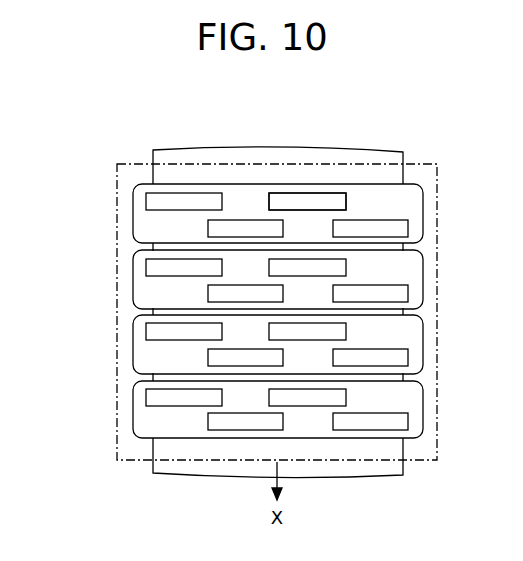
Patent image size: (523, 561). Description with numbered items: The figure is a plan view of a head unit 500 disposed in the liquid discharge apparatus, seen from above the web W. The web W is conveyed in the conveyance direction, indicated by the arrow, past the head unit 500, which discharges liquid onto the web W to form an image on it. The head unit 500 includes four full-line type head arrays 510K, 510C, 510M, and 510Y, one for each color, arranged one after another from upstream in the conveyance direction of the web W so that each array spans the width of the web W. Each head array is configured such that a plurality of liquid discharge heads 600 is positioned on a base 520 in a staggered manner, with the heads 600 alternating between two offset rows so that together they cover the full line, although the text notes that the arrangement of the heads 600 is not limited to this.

The head unit 500 is at (140, 130).
The web W is at (238, 157).
The base 520 is at (410, 198).
The head array 510K is at (133, 221).
The head array 510C is at (133, 288).
The head array 510M is at (133, 353).
The head array 510Y is at (133, 417).
The liquid discharge head 600 is at (327, 203).